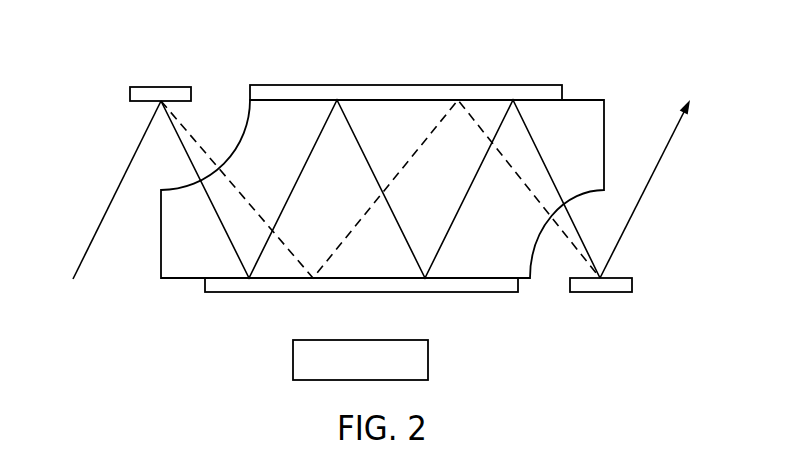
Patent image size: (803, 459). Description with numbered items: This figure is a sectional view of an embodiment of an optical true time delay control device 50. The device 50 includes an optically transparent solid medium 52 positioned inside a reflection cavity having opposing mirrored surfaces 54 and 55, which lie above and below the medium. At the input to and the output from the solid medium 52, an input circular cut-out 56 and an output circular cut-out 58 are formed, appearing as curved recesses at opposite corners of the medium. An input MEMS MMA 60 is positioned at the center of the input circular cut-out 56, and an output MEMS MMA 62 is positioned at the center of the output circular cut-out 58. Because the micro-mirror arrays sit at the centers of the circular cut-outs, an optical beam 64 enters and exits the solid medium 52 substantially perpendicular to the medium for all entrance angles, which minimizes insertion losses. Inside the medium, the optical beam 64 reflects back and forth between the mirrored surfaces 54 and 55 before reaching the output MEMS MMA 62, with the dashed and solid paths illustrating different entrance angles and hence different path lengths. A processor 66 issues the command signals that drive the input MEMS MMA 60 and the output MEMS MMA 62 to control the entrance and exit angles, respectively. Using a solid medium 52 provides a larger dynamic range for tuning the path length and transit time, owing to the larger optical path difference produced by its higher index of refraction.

The optical TTD control device 50 is at (596, 42).
The optically transparent solid medium 52 is at (348, 197).
The mirrored surface 54 is at (406, 85).
The mirrored surface 55 is at (361, 293).
The input circular cut-out 56 is at (140, 109).
The output circular cut-out 58 is at (619, 268).
The input MEMS MMA 60 is at (162, 87).
The output MEMS MMA 62 is at (600, 292).
The optical beam 64 is at (97, 228).
The processor 66 is at (430, 358).